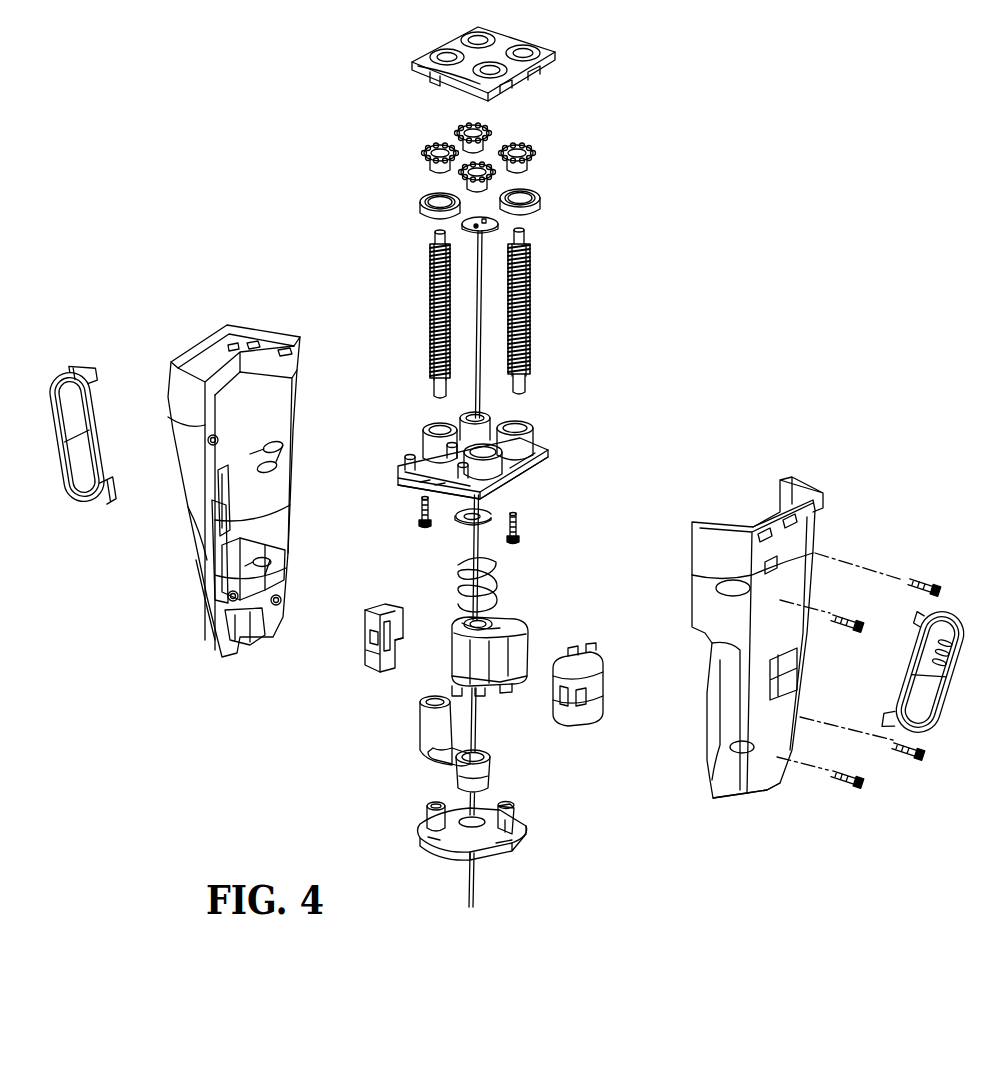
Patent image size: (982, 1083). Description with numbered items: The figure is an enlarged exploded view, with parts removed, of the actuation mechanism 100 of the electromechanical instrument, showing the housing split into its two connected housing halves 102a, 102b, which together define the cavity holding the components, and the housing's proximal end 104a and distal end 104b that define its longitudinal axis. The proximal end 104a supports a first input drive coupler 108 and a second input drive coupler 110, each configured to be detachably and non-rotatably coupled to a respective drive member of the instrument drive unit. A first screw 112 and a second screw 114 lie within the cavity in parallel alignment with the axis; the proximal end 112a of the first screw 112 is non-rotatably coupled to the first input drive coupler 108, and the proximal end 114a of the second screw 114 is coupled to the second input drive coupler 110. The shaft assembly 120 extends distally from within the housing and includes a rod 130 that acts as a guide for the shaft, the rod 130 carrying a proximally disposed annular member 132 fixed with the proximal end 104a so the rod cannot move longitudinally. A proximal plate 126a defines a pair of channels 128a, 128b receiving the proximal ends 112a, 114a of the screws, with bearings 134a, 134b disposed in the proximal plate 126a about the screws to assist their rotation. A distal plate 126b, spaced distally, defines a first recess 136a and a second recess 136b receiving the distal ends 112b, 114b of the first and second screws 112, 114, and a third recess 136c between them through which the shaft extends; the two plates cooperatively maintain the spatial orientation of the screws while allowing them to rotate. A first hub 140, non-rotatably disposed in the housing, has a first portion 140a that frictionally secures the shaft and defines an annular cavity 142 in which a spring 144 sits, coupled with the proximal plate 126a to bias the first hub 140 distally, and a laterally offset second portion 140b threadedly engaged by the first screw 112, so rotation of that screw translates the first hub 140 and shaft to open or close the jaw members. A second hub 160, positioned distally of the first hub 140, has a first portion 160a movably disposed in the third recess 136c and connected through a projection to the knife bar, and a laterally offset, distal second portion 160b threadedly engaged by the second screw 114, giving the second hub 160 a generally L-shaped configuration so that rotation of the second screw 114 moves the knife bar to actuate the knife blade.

The actuation mechanism 100 is at (743, 352).
The housing half 102a is at (164, 386).
The housing half 102b is at (820, 572).
The proximal end of housing 104a is at (808, 492).
The distal end of housing 104b is at (733, 800).
The first input drive coupler 108 is at (530, 150).
The second input drive coupler 110 is at (430, 148).
The first screw 112 is at (531, 295).
The proximal end of first screw 112a is at (524, 235).
The distal end of first screw 112b is at (527, 386).
The second screw 114 is at (430, 303).
The proximal end of second screw 114a is at (436, 236).
The distal end of second screw 114b is at (438, 390).
The shaft assembly 120 is at (598, 457).
The proximal plate 126a is at (528, 490).
The distal plate 126b is at (430, 847).
The channel 128a is at (518, 424).
The channel 128b is at (440, 423).
The rod 130 is at (483, 333).
The annular member 132 is at (470, 224).
The bearing 134a is at (541, 200).
The bearing 134b is at (424, 203).
The first recess 136a is at (512, 798).
The second recess 136b is at (434, 802).
The third recess 136c is at (478, 817).
The first hub 140 is at (506, 694).
The first portion of first hub 140a is at (450, 640).
The second portion of first hub 140b is at (528, 637).
The annular cavity 142 is at (490, 614).
The spring 144 is at (497, 572).
The second hub 160 is at (416, 748).
The first portion of second hub 160a is at (478, 781).
The second portion of second hub 160b is at (421, 718).